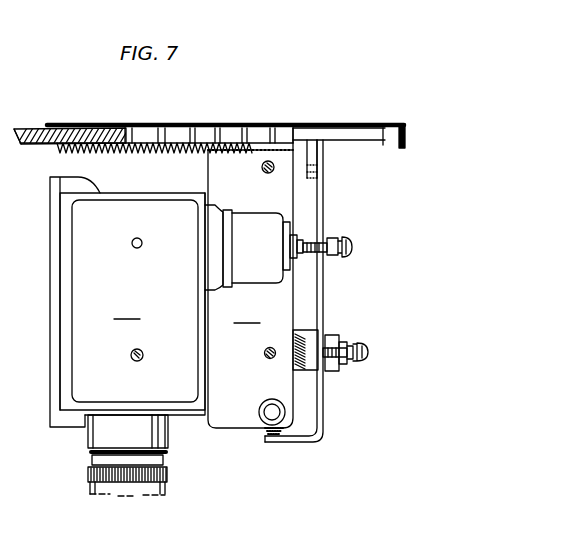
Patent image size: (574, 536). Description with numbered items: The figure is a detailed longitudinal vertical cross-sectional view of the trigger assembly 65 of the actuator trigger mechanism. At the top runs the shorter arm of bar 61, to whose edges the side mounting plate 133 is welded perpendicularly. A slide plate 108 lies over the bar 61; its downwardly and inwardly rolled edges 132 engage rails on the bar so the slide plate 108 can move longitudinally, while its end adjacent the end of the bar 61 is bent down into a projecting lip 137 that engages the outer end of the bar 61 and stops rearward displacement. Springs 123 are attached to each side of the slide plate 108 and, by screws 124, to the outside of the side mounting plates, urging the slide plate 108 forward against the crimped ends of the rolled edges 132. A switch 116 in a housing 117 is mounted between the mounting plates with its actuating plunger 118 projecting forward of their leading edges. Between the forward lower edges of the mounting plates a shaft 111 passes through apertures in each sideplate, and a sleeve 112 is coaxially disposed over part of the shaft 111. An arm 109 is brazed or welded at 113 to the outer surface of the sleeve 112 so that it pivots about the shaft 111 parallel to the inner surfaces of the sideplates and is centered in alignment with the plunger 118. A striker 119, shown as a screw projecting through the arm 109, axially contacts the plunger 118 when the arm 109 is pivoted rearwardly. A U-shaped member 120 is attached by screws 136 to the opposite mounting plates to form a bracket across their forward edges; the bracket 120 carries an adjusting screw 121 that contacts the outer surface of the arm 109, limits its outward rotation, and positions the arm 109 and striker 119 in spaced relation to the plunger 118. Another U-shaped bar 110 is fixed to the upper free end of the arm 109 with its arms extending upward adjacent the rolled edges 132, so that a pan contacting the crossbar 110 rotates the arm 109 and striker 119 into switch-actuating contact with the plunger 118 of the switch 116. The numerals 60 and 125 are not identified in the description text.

The plate 60 is at (33, 127).
The bar 61 is at (22, 146).
The trigger assembly 65 is at (313, 124).
The slide plate 108 is at (250, 123).
The arm 109 is at (326, 308).
The U-shaped bar 110 is at (320, 170).
The shaft 111 is at (268, 408).
The sleeve 112 is at (262, 420).
The weld 113 is at (264, 436).
The switch 116 is at (132, 304).
The housing 117 is at (78, 344).
The actuating plunger 118 is at (300, 245).
The striker 119 is at (308, 250).
The U-shaped member 120 is at (338, 372).
The adjusting screw 121 is at (371, 351).
The springs 123 is at (157, 155).
The screws 124 is at (262, 170).
The connector 125 is at (90, 480).
The rolled edges 132 is at (383, 147).
The side mounting plate 133 is at (250, 278).
The screws 136 is at (264, 354).
The projecting lip 137 is at (408, 127).